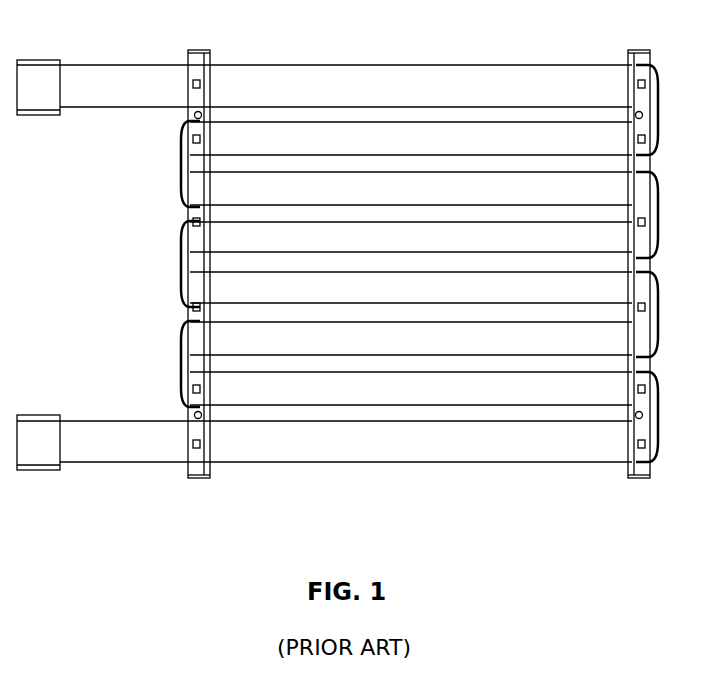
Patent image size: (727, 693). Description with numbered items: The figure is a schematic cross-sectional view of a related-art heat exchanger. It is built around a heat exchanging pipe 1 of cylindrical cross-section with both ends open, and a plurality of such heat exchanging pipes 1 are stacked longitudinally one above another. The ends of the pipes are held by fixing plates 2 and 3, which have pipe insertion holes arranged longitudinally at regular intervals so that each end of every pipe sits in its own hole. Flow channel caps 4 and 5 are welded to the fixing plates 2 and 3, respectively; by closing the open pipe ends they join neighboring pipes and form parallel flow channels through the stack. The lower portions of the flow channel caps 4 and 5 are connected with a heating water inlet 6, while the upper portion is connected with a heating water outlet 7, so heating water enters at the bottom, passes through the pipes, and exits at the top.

The heat exchanging pipe 1 is at (293, 118).
The fixing plate 2 is at (200, 58).
The fixing plate 3 is at (641, 50).
The flow channel cap 4 is at (180, 163).
The flow channel cap 5 is at (660, 110).
The heating water inlet 6 is at (98, 457).
The heating water outlet 7 is at (97, 72).